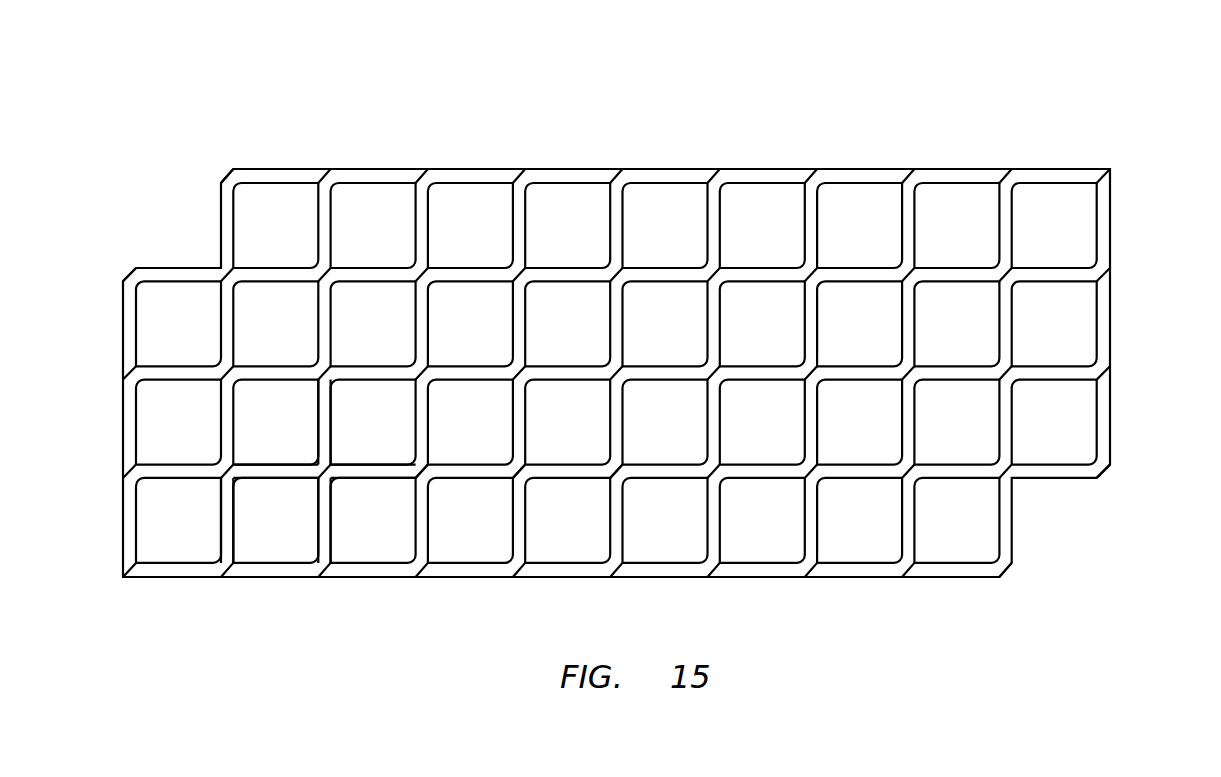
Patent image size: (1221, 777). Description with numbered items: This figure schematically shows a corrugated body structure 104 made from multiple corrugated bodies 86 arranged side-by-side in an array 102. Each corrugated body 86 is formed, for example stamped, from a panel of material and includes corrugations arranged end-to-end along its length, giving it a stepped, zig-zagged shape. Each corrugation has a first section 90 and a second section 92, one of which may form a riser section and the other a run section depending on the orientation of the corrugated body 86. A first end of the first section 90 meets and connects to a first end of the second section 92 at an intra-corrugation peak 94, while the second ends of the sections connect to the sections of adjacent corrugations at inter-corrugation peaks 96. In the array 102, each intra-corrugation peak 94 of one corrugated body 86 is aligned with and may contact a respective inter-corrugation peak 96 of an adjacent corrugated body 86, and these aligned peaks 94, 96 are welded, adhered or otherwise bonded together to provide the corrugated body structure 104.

The corrugated body 86 is at (288, 166).
The first section 90 is at (413, 413).
The second section 92 is at (350, 464).
The intra-corrugation peak 94 is at (413, 466).
The inter-corrugation peak 96 is at (427, 468).
The array 102 is at (1132, 145).
The corrugated body structure 104 is at (148, 182).